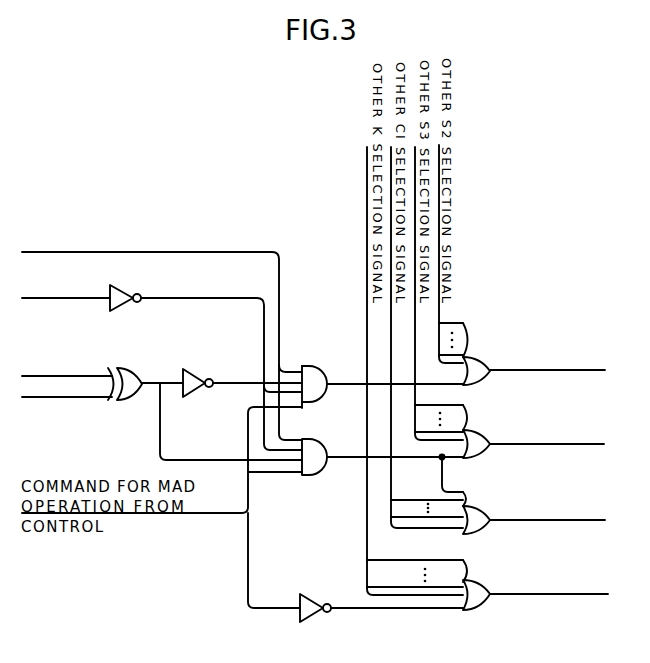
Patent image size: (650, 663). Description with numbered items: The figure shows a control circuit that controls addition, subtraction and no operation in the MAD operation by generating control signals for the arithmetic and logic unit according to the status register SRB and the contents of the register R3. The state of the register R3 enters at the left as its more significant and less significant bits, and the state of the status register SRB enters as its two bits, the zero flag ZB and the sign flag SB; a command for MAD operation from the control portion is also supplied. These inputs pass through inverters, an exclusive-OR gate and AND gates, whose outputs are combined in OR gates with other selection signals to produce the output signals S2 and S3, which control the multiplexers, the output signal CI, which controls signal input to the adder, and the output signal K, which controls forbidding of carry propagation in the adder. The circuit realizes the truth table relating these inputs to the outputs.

The zero flag ZB is at (162, 364).
The sign flag SB is at (67, 389).
The output signal S2 is at (534, 366).
The output signal S3 is at (533, 440).
The output signal CI is at (534, 516).
The output signal K is at (535, 590).